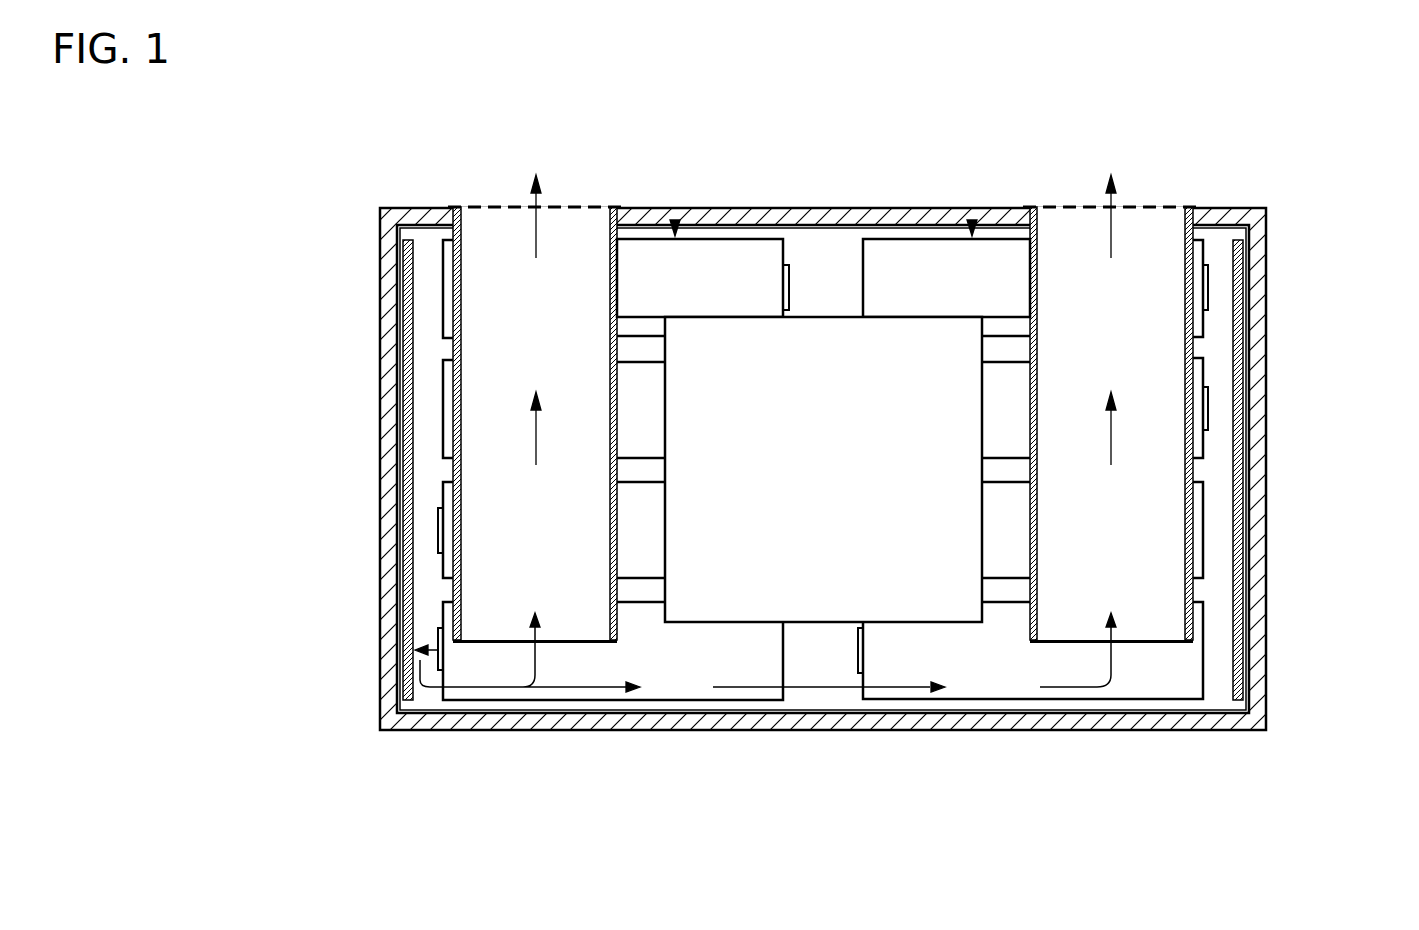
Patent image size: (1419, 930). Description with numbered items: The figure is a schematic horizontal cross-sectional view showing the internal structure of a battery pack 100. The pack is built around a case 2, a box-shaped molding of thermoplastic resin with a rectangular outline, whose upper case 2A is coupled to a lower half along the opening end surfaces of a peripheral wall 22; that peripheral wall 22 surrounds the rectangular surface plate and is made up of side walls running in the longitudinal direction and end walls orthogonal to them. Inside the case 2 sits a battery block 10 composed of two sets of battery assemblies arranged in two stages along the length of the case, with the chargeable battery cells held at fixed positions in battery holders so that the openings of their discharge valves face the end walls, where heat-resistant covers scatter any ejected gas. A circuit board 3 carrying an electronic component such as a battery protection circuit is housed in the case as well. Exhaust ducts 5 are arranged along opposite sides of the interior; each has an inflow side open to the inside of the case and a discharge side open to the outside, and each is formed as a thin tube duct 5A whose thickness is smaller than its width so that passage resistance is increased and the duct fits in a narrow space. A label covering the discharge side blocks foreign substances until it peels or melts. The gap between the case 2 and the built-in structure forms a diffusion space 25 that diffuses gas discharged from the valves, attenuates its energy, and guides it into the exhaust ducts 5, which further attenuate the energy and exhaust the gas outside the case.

The battery pack 100 is at (1279, 107).
The case 2 is at (870, 533).
The upper case 2A is at (870, 533).
The circuit board 3 is at (842, 490).
The exhaust duct 5 is at (824, 469).
The thin tube duct 5A is at (453, 438).
The battery block 10 is at (823, 145).
The peripheral wall 22 is at (328, 857).
The diffusion space 25 is at (437, 562).